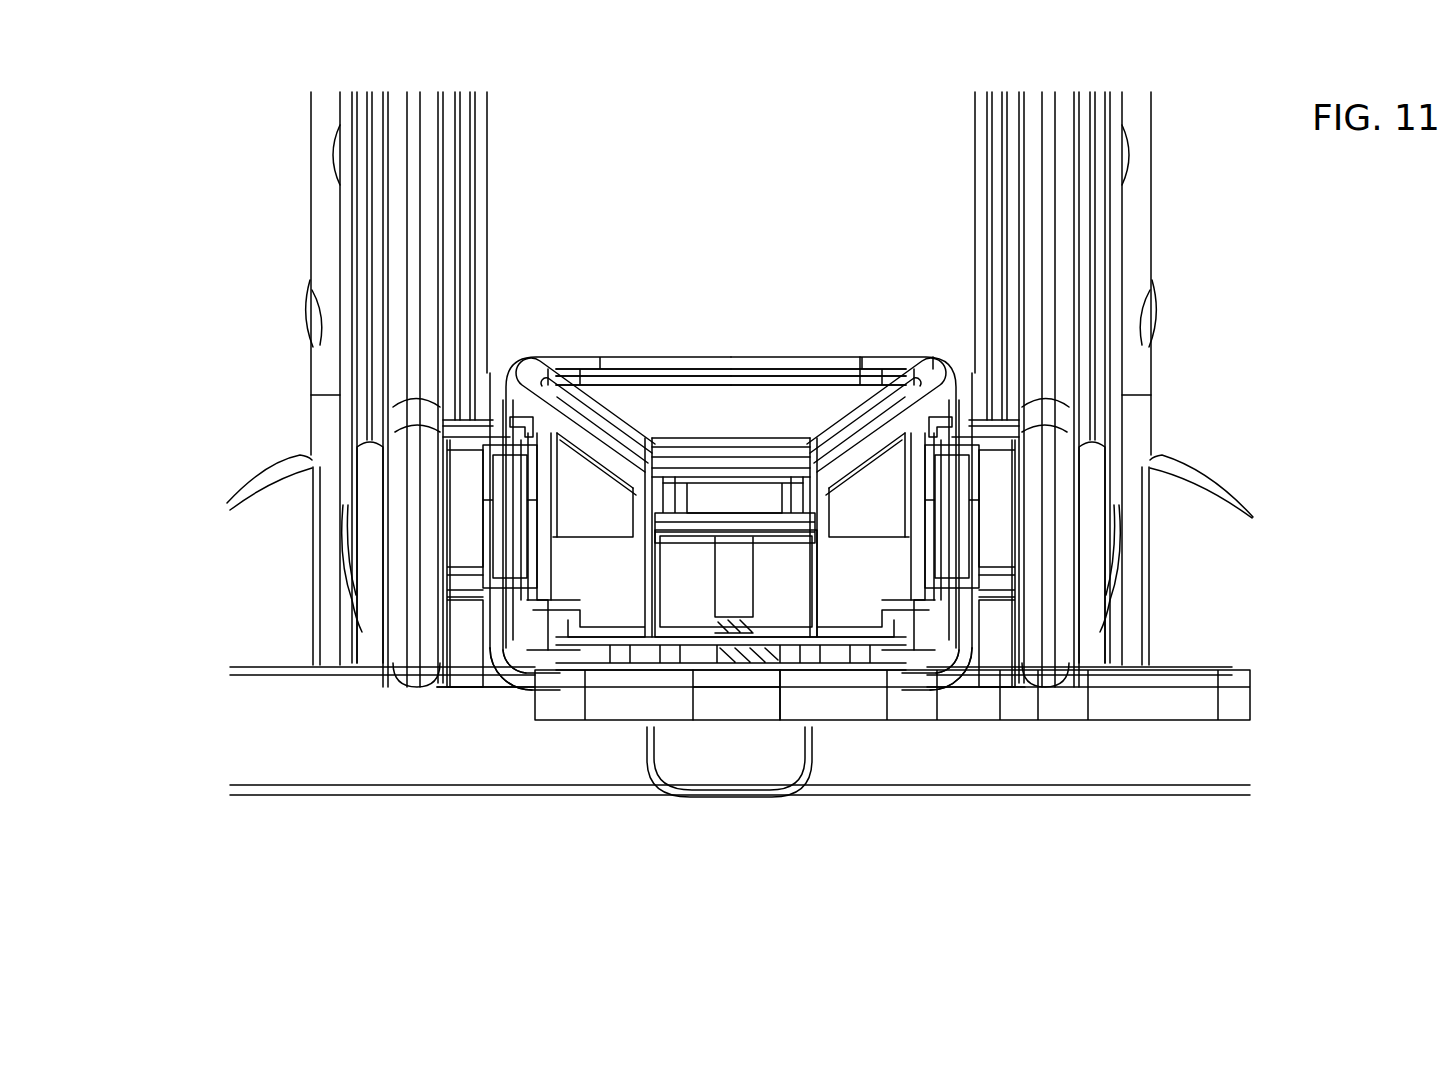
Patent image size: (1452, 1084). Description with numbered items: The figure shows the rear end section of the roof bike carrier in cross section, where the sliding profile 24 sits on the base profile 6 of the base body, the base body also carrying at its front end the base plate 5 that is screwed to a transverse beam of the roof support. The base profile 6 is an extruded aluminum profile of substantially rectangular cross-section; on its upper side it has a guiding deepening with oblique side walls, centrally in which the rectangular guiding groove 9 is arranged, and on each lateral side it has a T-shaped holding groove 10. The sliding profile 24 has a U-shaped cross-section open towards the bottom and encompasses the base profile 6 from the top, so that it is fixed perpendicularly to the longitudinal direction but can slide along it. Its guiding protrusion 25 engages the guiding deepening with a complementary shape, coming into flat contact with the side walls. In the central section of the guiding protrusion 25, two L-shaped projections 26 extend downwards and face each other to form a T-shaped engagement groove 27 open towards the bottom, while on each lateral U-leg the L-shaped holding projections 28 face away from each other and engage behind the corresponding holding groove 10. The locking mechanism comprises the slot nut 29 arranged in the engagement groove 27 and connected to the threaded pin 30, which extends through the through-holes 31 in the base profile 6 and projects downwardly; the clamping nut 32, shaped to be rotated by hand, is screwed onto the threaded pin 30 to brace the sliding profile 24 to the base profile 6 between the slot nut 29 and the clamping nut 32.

The base plate 5 is at (1193, 707).
The base profile 6 is at (817, 563).
The guiding groove 9 is at (583, 383).
The holding groove 10 is at (520, 502).
The sliding profile 24 is at (886, 357).
The guiding protrusion 25 is at (677, 487).
The L-shaped projections 26 is at (520, 680).
The engagement groove 27 is at (803, 483).
The holding projections 28 is at (520, 393).
The slot nut 29 is at (740, 497).
The threaded pin 30 is at (737, 587).
The through-holes 31 is at (720, 663).
The clamping nut 32 is at (712, 762).